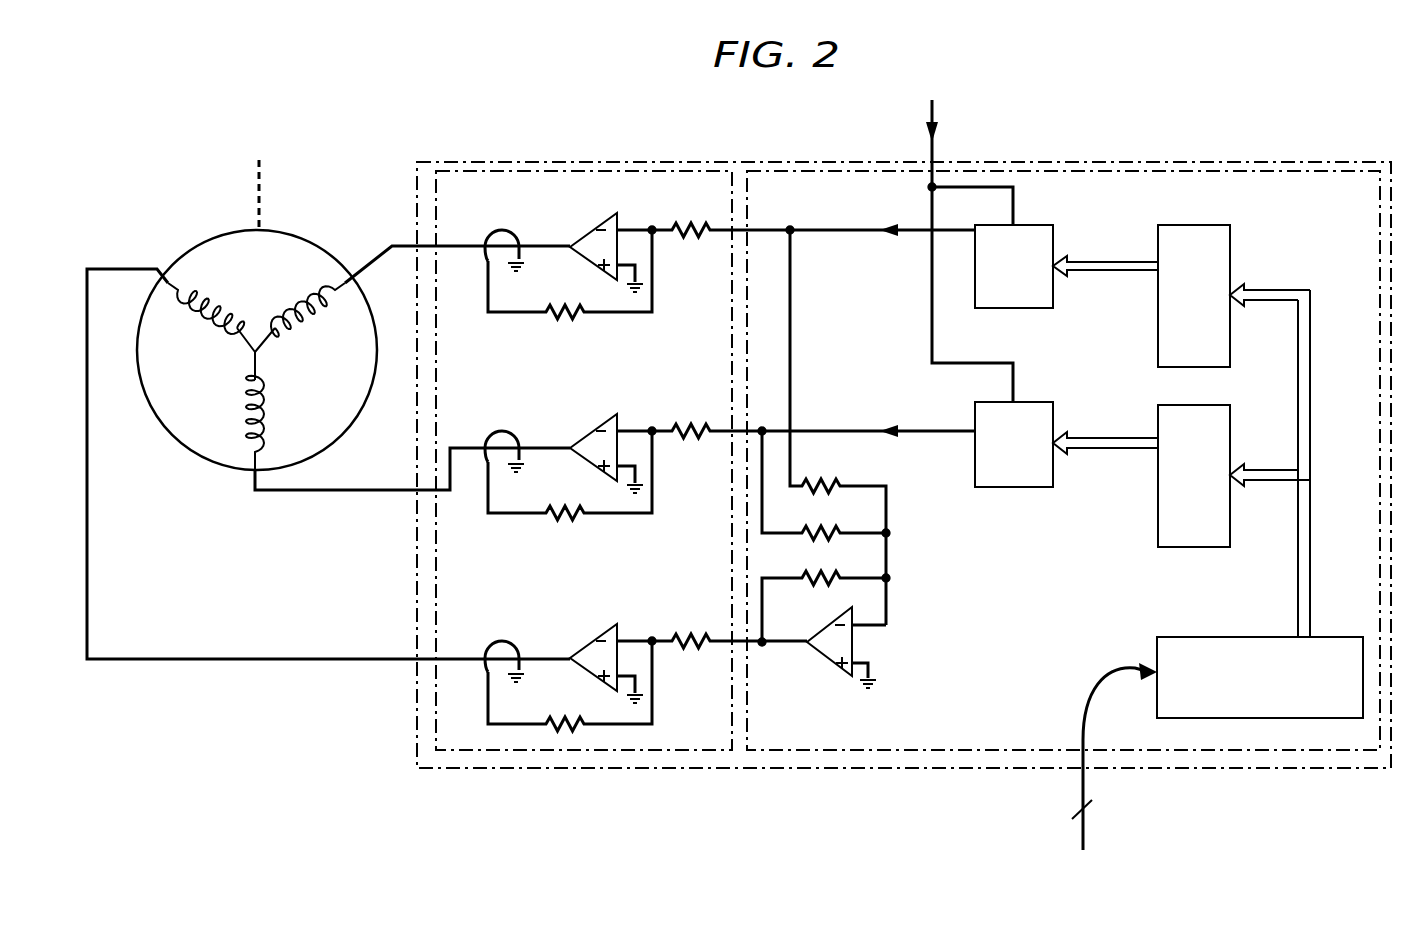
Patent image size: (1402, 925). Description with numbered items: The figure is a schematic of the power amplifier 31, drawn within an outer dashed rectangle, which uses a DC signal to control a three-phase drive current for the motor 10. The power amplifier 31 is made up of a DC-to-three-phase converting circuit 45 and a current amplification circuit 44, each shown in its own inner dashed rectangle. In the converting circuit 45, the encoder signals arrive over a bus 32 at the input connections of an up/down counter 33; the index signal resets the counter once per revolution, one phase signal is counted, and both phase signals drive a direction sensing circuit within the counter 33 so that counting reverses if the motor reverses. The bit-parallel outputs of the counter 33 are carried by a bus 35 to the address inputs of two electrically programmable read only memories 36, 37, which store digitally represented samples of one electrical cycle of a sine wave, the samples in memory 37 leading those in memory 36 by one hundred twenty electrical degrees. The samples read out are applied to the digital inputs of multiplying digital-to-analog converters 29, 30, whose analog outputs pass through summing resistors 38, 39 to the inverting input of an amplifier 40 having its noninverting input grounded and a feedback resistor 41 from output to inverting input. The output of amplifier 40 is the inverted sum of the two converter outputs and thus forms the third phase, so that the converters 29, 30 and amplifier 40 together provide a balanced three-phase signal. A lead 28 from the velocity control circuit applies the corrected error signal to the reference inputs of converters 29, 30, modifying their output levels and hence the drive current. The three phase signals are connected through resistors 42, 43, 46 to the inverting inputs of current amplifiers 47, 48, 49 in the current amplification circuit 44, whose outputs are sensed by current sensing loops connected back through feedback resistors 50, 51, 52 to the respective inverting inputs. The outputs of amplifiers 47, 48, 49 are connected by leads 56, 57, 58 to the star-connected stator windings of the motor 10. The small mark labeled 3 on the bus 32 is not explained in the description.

The motor 10 is at (191, 243).
The lead 56 is at (366, 263).
The lead 57 is at (380, 488).
The lead 58 is at (266, 657).
The power amplifier 31 is at (449, 161).
The current amplification circuit 44 is at (497, 752).
The DC-to-three-phase converting circuit 45 is at (1254, 171).
The current amplifier 47 is at (596, 228).
The current amplifier 48 is at (596, 429).
The current amplifier 49 is at (596, 639).
The feedback resistor 50 is at (552, 311).
The feedback resistor 51 is at (552, 512).
The feedback resistor 52 is at (552, 723).
The resistor 42 is at (697, 240).
The resistor 43 is at (692, 425).
The resistor 46 is at (692, 636).
The lead 28 is at (929, 118).
The multiplying digital-to-analog converter 29 is at (1056, 242).
The multiplying digital-to-analog converter 30 is at (1056, 420).
The electrically programmable read only memory 36 is at (1233, 258).
The electrically programmable read only memory 37 is at (1233, 445).
The bus 35 is at (1312, 614).
The up/down counter 33 is at (1212, 637).
The bus 32 is at (1081, 782).
The encoder signal line 3 is at (1087, 823).
The summing resistor 38 is at (822, 480).
The summing resistor 39 is at (822, 527).
The feedback resistor 41 is at (822, 572).
The amplifier 40 is at (816, 662).